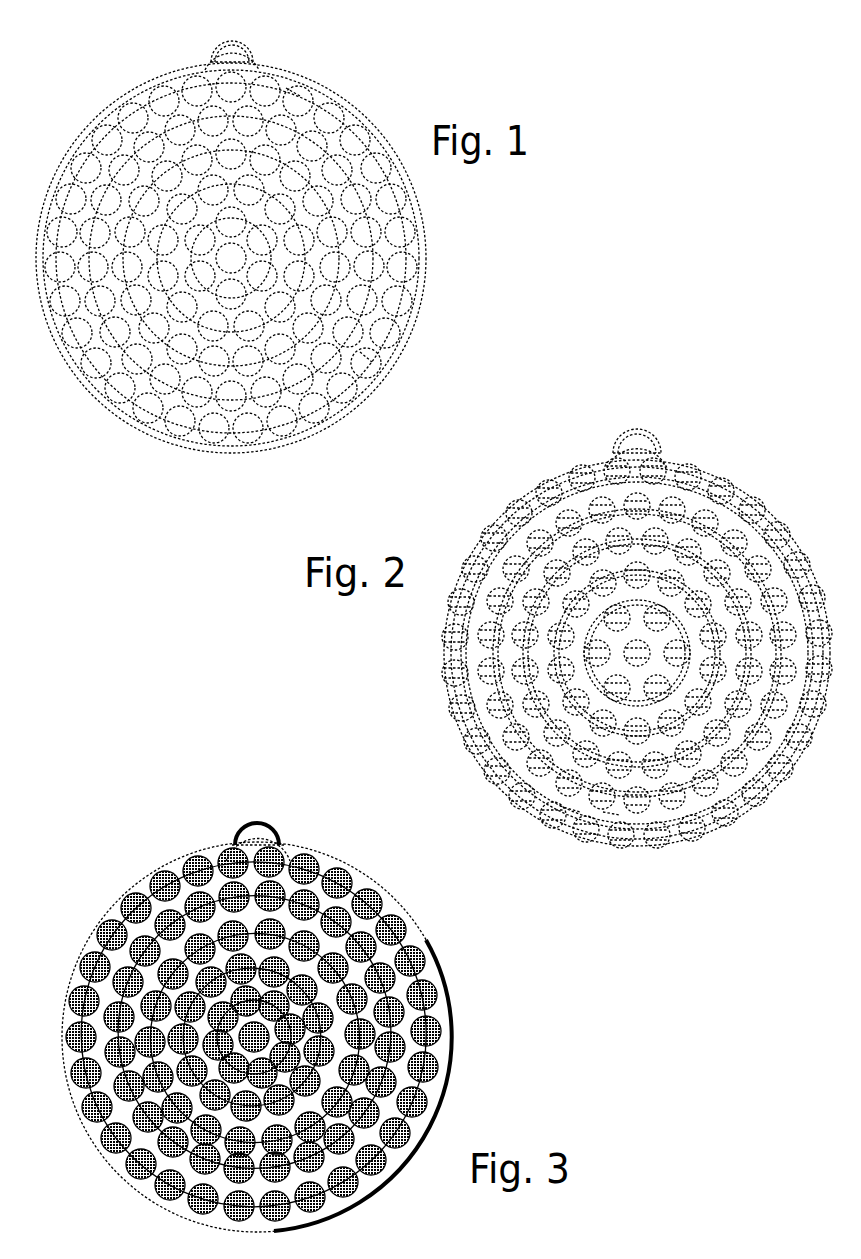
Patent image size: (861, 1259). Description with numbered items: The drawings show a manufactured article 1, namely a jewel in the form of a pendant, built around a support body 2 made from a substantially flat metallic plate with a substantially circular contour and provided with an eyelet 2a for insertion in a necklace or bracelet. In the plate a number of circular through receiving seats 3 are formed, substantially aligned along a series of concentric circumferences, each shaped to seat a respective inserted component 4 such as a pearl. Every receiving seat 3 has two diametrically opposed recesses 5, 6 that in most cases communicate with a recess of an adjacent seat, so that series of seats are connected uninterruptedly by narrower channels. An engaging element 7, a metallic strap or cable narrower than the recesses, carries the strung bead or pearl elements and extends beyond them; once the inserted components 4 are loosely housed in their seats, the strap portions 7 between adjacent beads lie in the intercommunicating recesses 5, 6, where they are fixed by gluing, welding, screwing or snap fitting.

In FIG. 1, the manufactured article 1 is at (392, 115).
In FIG. 2, the manufactured article 1 is at (684, 436).
In FIG. 3, the manufactured article 1 is at (162, 851).
In FIG. 1, the support body 2 is at (407, 303).
In FIG. 2, the support body 2 is at (465, 700).
In FIG. 3, the support body 2 is at (435, 1088).
In FIG. 1, the eyelet 2a is at (213, 50).
In FIG. 2, the eyelet 2a is at (608, 437).
In FIG. 3, the eyelet 2a is at (285, 830).
In FIG. 1, the receiving seat 3 is at (112, 120).
In FIG. 2, the receiving seat 3 is at (765, 775).
In FIG. 3, the inserted component 4 is at (95, 930).
In FIG. 1, the recess 5 is at (322, 115).
In FIG. 2, the recess 5 is at (568, 800).
In FIG. 1, the recess 6 is at (292, 92).
In FIG. 2, the recess 6 is at (610, 810).
In FIG. 2, the engaging element 7 is at (772, 540).
In FIG. 3, the engaging element 7 is at (394, 1150).